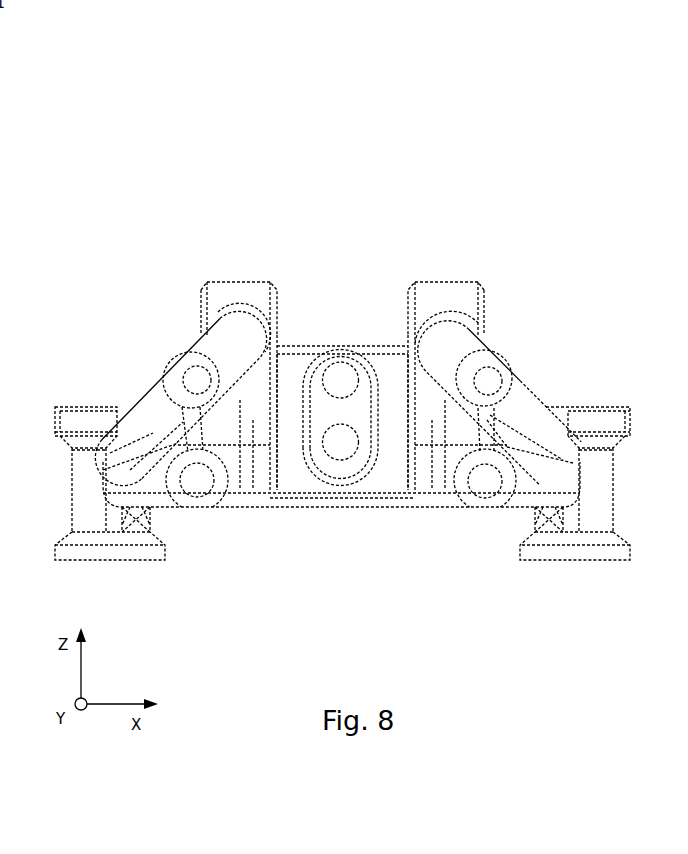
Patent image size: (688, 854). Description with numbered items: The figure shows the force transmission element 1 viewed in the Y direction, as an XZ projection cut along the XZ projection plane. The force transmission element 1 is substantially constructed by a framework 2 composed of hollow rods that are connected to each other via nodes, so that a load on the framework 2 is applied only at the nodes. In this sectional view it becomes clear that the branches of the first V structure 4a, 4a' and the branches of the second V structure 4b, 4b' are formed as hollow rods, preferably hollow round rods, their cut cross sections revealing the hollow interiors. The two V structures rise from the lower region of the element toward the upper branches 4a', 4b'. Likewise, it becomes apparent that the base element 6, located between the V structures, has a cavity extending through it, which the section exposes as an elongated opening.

The force transmission element 1 is at (553, 115).
The framework 2 is at (487, 348).
The branch of the first V structure 4a is at (485, 525).
The branch of the second V structure 4b is at (207, 525).
The branch of the first V structure 4a' is at (537, 397).
The branch of the second V structure 4b' is at (143, 394).
The base element 6 is at (387, 478).